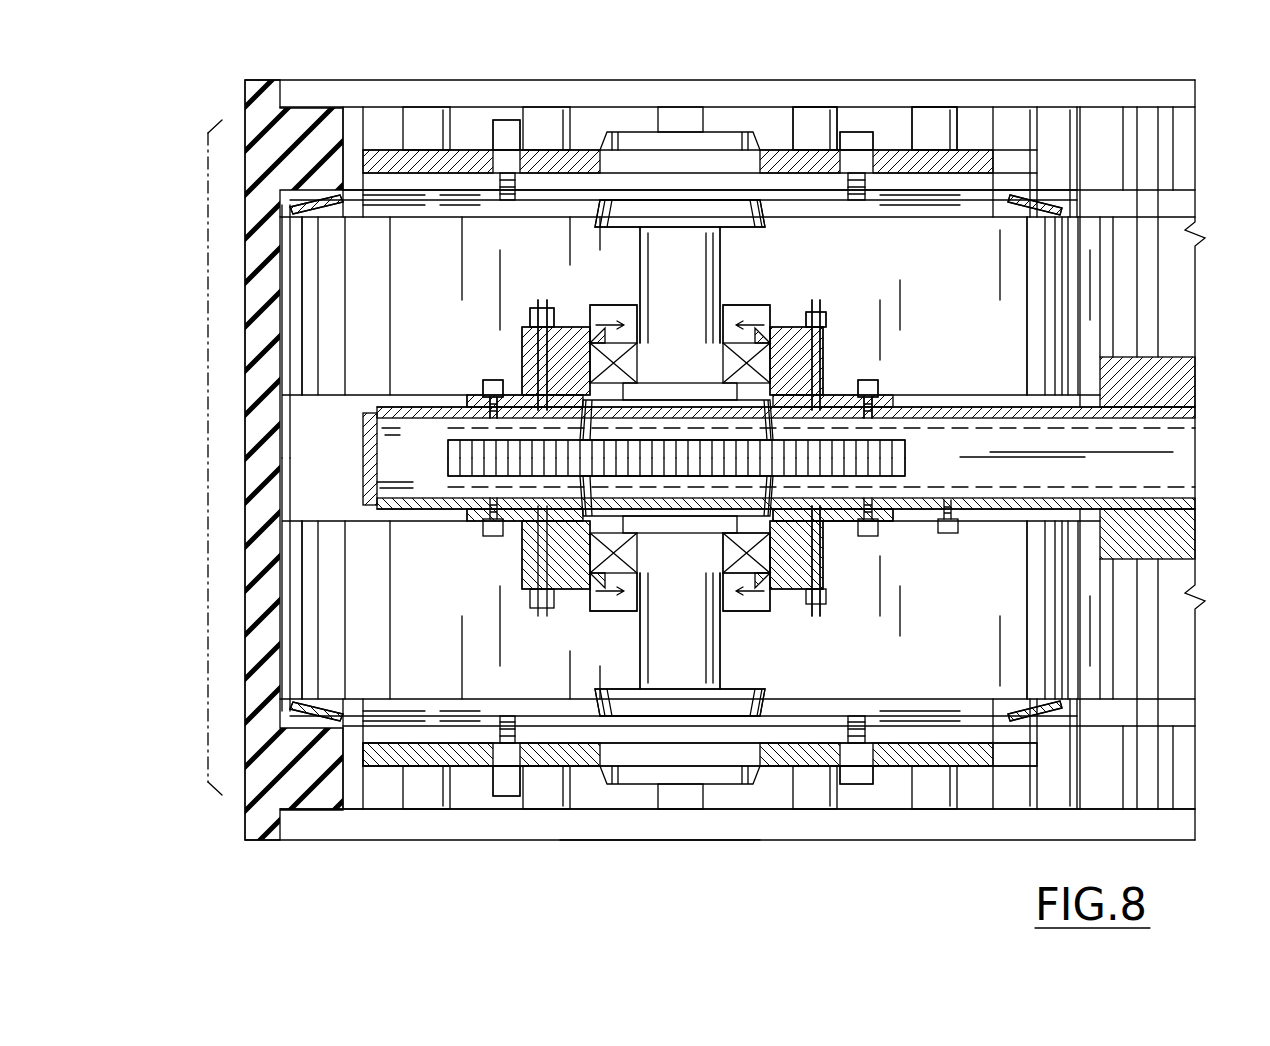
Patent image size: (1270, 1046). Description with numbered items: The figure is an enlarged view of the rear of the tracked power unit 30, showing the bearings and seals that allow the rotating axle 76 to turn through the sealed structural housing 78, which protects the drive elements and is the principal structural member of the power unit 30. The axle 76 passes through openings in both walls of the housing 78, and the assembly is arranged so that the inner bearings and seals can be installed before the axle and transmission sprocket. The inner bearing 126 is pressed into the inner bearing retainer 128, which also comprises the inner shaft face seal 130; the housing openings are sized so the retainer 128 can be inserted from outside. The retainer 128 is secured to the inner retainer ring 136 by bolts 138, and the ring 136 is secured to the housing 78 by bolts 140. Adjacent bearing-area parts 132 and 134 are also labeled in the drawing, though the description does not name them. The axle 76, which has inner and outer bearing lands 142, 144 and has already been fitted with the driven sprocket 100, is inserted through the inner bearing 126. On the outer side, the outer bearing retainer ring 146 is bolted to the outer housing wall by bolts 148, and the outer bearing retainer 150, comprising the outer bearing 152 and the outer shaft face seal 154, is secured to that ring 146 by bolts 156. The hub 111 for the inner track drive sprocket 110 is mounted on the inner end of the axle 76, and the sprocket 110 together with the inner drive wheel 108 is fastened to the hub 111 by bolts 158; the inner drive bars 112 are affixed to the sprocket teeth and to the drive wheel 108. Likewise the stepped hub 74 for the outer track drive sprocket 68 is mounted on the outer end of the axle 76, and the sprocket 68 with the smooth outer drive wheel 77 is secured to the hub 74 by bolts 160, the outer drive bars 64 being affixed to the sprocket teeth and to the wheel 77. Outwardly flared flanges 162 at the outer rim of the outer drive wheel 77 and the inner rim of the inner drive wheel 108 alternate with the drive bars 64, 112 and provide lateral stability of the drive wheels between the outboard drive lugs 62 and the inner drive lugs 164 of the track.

The tracked power unit 30 is at (659, 868).
The outboard drive lugs 62 is at (262, 778).
The outer drive bars 64 is at (500, 808).
The outer track drive sprocket 68 is at (900, 760).
The stepped hub 74 is at (620, 723).
The rotating axle 76 is at (692, 279).
The outer drive wheel 77 is at (956, 681).
The sealed structural housing 78 is at (1183, 398).
The driven sprocket 100 is at (500, 478).
The inner drive wheel 108 is at (940, 257).
The inner track drive sprocket 110 is at (893, 185).
The hub 111 is at (570, 187).
The inner drive bars 112 is at (923, 123).
The inner bearing 126 is at (818, 325).
The inner bearing retainer 128 is at (540, 318).
The inner shaft face seal 130 is at (745, 297).
The bearing block 132 is at (815, 398).
The lower bearing plate 134 is at (888, 512).
The inner retainer ring 136 is at (508, 385).
The bolts 138 is at (527, 345).
The bolts 140 is at (870, 392).
The inner bearing land 142 is at (588, 322).
The outer bearing land 144 is at (600, 592).
The outer bearing retainer ring 146 is at (818, 598).
The bolts 148 is at (948, 533).
The outer bearing retainer 150 is at (527, 560).
The outer bearing 152 is at (818, 567).
The outer shaft face seal 154 is at (752, 630).
The bolts 156 is at (826, 602).
The bolts 158 is at (830, 170).
The bolts 160 is at (848, 790).
The outwardly flared flanges 162 is at (460, 710).
The inner drive lugs 164 is at (290, 148).